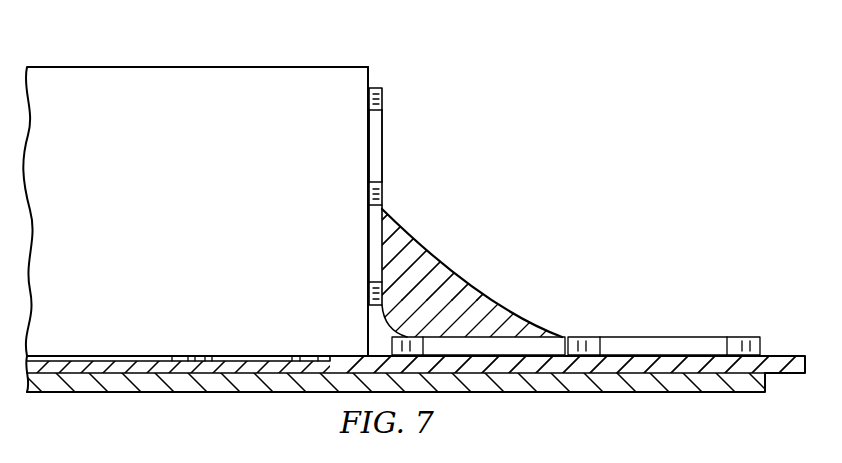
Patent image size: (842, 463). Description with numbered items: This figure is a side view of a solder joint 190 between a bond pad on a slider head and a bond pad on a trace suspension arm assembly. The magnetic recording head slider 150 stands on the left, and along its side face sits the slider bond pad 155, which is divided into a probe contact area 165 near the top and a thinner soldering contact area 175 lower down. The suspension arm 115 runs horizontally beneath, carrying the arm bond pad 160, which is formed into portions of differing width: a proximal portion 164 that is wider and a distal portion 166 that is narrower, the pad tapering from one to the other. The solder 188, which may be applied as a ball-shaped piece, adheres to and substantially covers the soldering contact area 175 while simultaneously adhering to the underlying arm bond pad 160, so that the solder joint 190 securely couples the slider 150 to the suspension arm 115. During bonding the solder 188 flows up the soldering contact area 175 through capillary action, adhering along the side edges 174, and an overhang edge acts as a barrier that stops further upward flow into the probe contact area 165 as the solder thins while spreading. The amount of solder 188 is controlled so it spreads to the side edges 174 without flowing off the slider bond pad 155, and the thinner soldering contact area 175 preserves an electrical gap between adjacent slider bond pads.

The magnetic recording head slider 150 is at (180, 66).
The probe contact area 165 is at (383, 130).
The slider bond pad 155 is at (375, 165).
The soldering contact area 175 is at (382, 209).
The solder joint 190 is at (572, 297).
The solder 188 is at (478, 290).
The side edges 174 is at (382, 250).
The distal portion 166 is at (510, 348).
The arm bond pad 160 is at (664, 322).
The proximal portion 164 is at (680, 347).
The suspension arm 115 is at (540, 393).